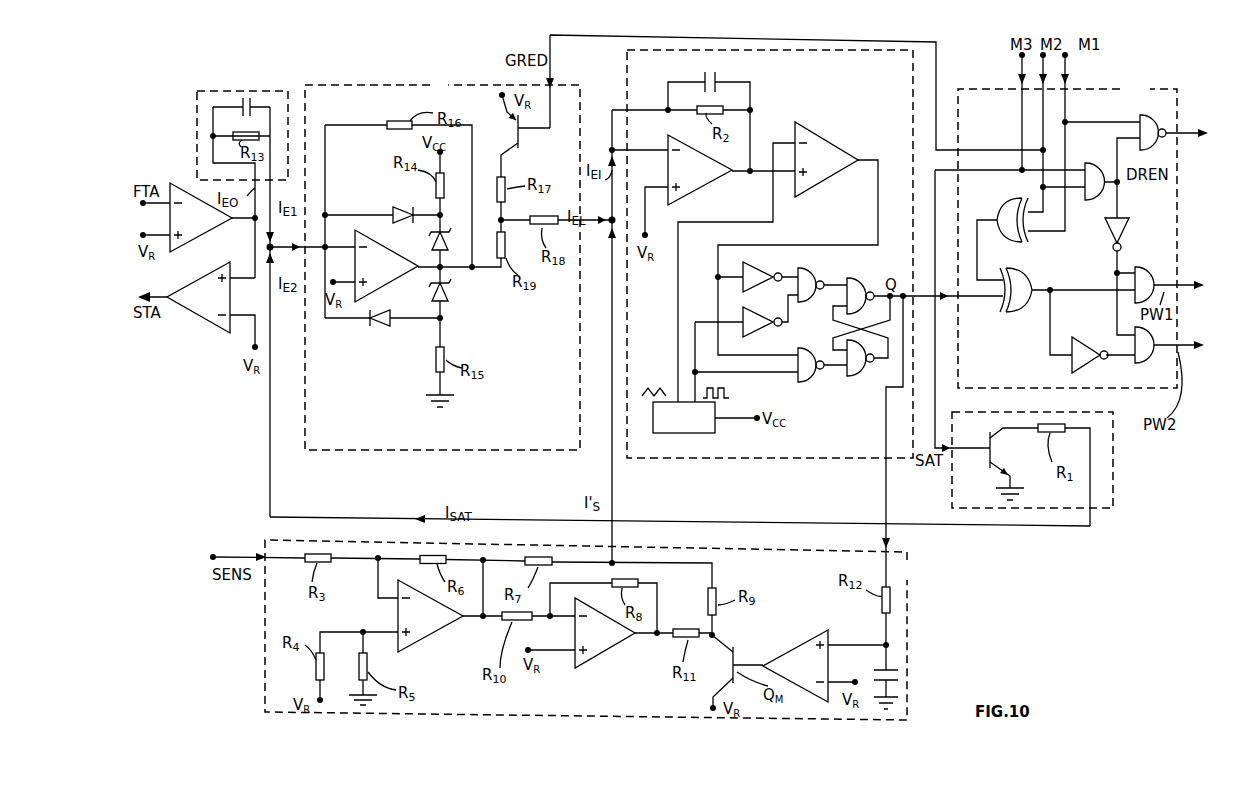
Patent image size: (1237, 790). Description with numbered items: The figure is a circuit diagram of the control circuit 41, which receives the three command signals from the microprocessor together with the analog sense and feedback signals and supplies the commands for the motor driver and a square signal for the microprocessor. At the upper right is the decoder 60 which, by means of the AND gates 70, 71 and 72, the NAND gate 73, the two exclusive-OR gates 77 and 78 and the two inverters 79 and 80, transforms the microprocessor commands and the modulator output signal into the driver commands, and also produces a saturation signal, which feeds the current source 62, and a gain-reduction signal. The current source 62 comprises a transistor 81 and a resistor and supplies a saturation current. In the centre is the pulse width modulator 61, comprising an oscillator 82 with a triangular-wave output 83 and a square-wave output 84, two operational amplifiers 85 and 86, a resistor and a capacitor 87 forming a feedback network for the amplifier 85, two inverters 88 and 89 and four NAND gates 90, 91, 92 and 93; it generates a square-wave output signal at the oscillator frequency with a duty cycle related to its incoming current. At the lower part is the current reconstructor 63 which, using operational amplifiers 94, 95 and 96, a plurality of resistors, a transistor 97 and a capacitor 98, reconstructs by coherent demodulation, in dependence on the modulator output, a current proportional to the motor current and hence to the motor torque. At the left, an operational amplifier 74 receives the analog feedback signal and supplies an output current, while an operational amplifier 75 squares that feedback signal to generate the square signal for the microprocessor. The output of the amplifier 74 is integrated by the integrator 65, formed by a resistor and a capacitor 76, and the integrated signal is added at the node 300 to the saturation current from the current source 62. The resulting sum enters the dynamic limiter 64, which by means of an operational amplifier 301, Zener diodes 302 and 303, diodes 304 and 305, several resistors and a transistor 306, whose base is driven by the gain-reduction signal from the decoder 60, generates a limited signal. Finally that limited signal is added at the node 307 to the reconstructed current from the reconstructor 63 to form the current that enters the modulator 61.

The integrator 65 is at (212, 93).
The capacitor 76 is at (261, 96).
The dynamic limiter 64 is at (432, 95).
The operational amplifier 74 is at (216, 228).
The operational amplifier 75 is at (192, 312).
The node 300 is at (269, 252).
The diode 304 is at (398, 207).
The Zener diode 302 is at (433, 242).
The operational amplifier 301 is at (405, 274).
The Zener diode 303 is at (452, 292).
The diode 305 is at (380, 327).
The transistor 306 is at (530, 138).
The node 307 is at (607, 230).
The capacitor 87 is at (692, 78).
The operational amplifier 85 is at (705, 185).
The operational amplifier 86 is at (825, 140).
The inverter 88 is at (762, 268).
The inverter 89 is at (754, 330).
The NAND gate 90 is at (813, 270).
The NAND gate 91 is at (808, 348).
The NAND gate 92 is at (860, 279).
The NAND gate 93 is at (856, 378).
The triangular-wave output 83 is at (676, 364).
The square-wave output 84 is at (698, 380).
The oscillator 82 is at (718, 428).
The pulse width modulator 61 is at (818, 445).
The decoder 60 is at (1122, 108).
The NAND gate 73 is at (1152, 158).
The AND gate 70 is at (1092, 163).
The exclusive-OR gate 77 is at (1003, 210).
The inverter 79 is at (1128, 234).
The AND gate 71 is at (1147, 268).
The exclusive-OR gate 78 is at (1017, 312).
The inverter 80 is at (1080, 338).
The AND gate 72 is at (1142, 364).
The transistor 81 is at (1003, 466).
The current source 62 is at (1113, 470).
The operational amplifier 94 is at (440, 630).
The operational amplifier 95 is at (615, 646).
The operational amplifier 96 is at (804, 643).
The transistor 97 is at (737, 650).
The capacitor 98 is at (903, 665).
The current reconstructor 63 is at (898, 570).
The control circuit 41 is at (978, 599).